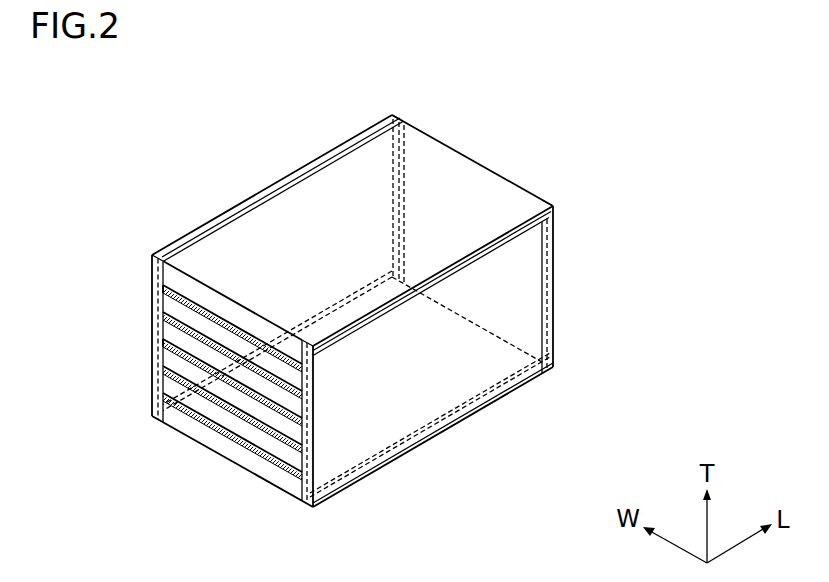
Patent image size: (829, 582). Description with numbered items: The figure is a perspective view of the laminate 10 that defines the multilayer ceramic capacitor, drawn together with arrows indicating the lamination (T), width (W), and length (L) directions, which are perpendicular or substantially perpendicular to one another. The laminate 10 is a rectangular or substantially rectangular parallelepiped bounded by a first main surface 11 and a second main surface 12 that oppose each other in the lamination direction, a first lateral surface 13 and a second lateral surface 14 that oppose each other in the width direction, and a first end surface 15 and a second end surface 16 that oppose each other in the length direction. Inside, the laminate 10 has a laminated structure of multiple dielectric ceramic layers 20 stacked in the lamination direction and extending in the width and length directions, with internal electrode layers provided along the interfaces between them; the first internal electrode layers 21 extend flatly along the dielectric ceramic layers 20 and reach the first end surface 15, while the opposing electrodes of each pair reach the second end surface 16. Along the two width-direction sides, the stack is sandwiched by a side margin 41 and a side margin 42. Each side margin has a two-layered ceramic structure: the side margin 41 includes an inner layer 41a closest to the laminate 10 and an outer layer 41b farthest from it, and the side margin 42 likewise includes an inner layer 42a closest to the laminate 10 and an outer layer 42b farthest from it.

The laminate 10 is at (168, 114).
The first main surface 11 is at (380, 215).
The second main surface 12 is at (365, 440).
The first lateral surface 13 is at (308, 207).
The second lateral surface 14 is at (440, 390).
The first end surface 15 is at (223, 417).
The second end surface 16 is at (463, 207).
The dielectric ceramic layer 20 is at (207, 353).
The first internal electrode layer 21 is at (167, 298).
The side margin 41 is at (75, 163).
The inner layer 41a is at (185, 242).
The outer layer 41b is at (222, 214).
The side margin 42 is at (662, 157).
The inner layer 42a is at (537, 196).
The outer layer 42b is at (527, 226).